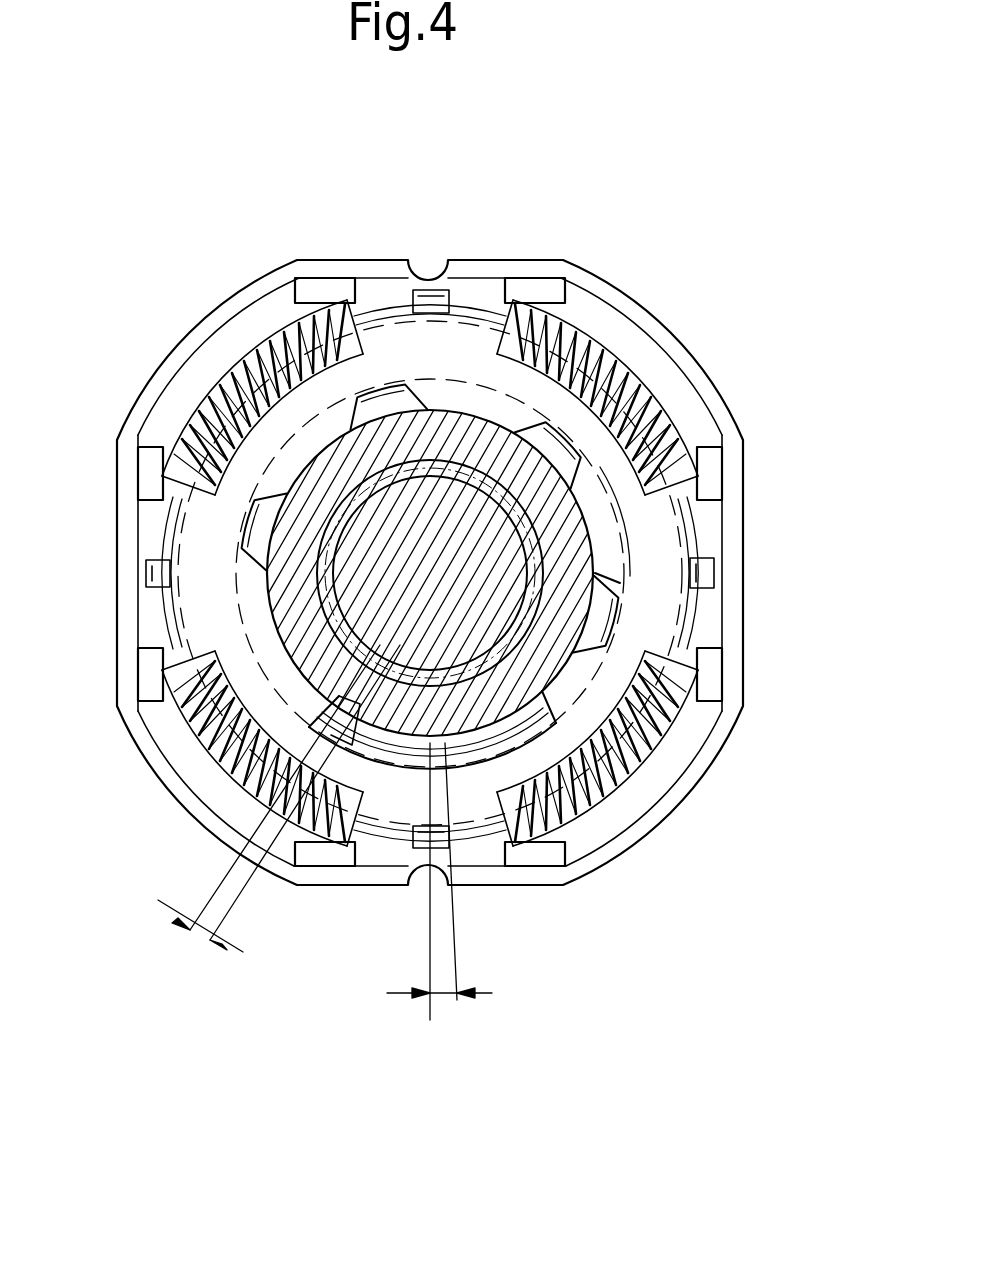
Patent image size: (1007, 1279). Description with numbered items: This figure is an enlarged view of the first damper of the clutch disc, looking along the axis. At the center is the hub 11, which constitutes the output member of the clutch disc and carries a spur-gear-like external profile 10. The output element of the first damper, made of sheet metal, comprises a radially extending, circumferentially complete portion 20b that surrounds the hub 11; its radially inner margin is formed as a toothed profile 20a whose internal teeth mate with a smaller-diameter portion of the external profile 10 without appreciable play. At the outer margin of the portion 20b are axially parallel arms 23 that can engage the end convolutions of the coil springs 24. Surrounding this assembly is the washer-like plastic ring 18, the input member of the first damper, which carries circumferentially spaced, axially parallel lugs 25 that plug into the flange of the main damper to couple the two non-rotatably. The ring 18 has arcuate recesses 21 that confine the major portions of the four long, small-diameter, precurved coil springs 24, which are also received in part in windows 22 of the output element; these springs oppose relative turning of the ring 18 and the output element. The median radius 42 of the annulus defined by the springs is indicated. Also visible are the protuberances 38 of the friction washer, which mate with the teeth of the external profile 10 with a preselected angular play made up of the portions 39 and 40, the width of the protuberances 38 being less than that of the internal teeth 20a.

The external profile 10 is at (290, 690).
The hub 11 is at (327, 470).
The ring 18 is at (648, 790).
The toothed profile 20a is at (612, 580).
The circumferentially complete portion 20b is at (625, 527).
The recesses 21 is at (660, 462).
The windows 22 is at (648, 703).
The arms 23 is at (472, 371).
The coil springs 24 is at (615, 420).
The lugs 25 is at (150, 683).
The protuberances 38 is at (370, 735).
The angular play 39 is at (203, 932).
The angular play 40 is at (438, 1000).
The median radius 42 is at (477, 380).